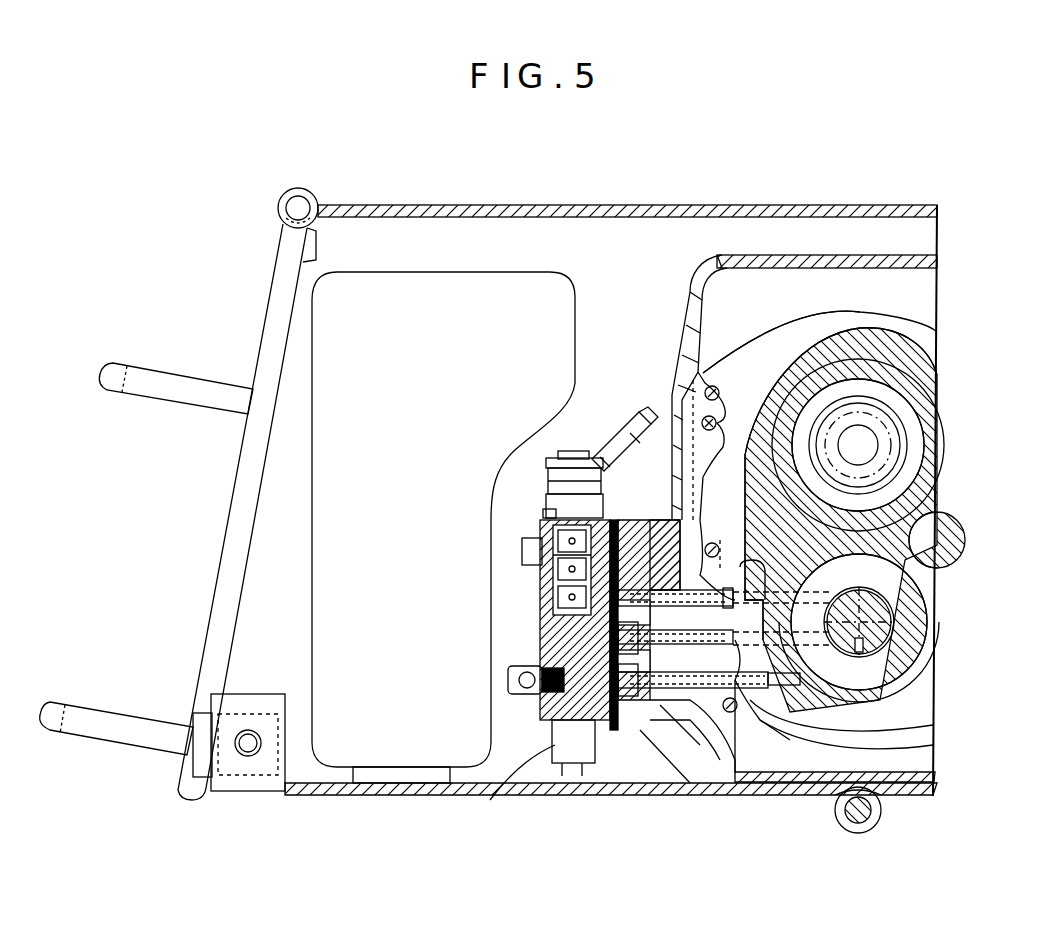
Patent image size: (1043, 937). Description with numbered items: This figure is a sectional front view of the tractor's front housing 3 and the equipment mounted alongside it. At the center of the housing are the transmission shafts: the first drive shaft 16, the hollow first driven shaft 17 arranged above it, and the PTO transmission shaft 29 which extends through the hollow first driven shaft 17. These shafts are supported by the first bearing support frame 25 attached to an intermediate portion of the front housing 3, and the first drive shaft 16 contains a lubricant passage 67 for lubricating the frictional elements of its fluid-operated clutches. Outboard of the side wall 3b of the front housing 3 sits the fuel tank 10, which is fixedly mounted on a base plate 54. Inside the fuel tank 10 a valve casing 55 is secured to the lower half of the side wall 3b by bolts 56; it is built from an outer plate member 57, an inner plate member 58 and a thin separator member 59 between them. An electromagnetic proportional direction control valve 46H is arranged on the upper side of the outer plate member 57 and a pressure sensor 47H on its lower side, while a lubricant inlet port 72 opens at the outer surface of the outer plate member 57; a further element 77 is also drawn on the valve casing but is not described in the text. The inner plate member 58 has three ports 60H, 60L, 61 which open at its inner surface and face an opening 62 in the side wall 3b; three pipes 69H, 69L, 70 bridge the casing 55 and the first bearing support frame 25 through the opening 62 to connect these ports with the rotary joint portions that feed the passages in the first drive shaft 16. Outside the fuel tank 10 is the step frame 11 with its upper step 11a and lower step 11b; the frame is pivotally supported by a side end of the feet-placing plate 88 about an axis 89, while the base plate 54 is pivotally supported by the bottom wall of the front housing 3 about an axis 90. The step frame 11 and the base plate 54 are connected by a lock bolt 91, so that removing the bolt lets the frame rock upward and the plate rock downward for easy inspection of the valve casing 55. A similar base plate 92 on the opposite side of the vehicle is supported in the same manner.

The front housing 3 is at (790, 255).
The side wall of front housing 3b is at (680, 484).
The fuel tank 10 is at (410, 300).
The step frame 11 is at (258, 300).
The upper step 11a is at (165, 385).
The lower step 11b is at (90, 718).
The first drive shaft 16 is at (885, 612).
The first driven shaft 17 is at (875, 420).
The first bearing support frame 25 is at (890, 378).
The transmission shaft 29 is at (862, 448).
The electromagnetic proportional direction control valve 46H is at (590, 440).
The pressure sensor 47H is at (558, 748).
The base plate 54 is at (535, 795).
The valve casing 55 is at (606, 748).
The bolt 56 is at (530, 550).
The outer plate member 57 is at (560, 738).
The inner plate member 58 is at (648, 708).
The separator member 59 is at (560, 660).
The port 60H is at (562, 608).
The port 60L is at (556, 640).
The port 61 is at (618, 722).
The opening 62 is at (690, 748).
The lubricant passage 67 is at (878, 648).
The pipe 69H is at (720, 600).
The pipe 69L is at (735, 640).
The pipe 70 is at (748, 782).
The lubricant inlet port 72 is at (535, 690).
The solenoid valve 77 is at (546, 510).
The feet-placing plate 88 is at (650, 205).
The axis 89 is at (283, 192).
The axis 90 is at (852, 830).
The lock bolt 91 is at (248, 742).
The base plate 92 is at (920, 796).